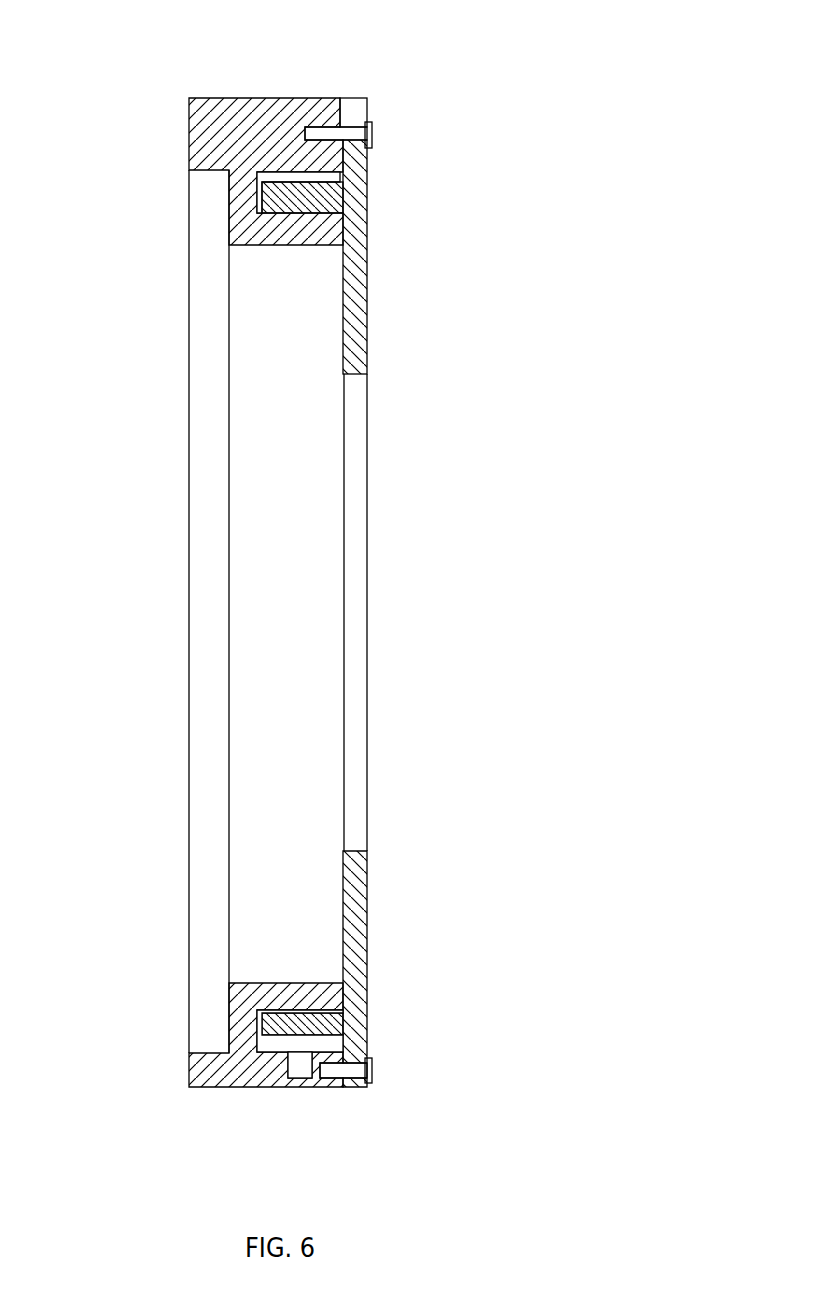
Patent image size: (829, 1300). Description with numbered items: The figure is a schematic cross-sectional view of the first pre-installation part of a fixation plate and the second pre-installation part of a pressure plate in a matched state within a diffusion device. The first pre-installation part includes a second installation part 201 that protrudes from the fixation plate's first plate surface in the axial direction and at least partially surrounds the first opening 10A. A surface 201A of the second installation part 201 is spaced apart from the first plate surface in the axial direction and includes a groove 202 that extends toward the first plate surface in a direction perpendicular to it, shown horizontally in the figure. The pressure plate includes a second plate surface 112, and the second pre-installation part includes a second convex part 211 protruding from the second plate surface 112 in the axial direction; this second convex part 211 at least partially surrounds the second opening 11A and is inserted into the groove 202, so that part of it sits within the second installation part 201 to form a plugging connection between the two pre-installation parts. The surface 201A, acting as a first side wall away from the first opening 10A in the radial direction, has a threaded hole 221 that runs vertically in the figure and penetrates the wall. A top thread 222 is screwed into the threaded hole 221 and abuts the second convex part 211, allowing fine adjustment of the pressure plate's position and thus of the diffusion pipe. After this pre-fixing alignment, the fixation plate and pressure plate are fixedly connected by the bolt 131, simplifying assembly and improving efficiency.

The second installation part 201 is at (245, 123).
The surface of the second installation part 201A is at (343, 112).
The groove 202 is at (286, 177).
The second convex part 211 is at (322, 203).
The second plate surface 112 is at (354, 278).
The bolt 131 is at (372, 132).
The first opening 10A is at (258, 531).
The second opening 11A is at (354, 513).
The top thread 222 is at (295, 1058).
The threaded hole 221 is at (296, 1078).